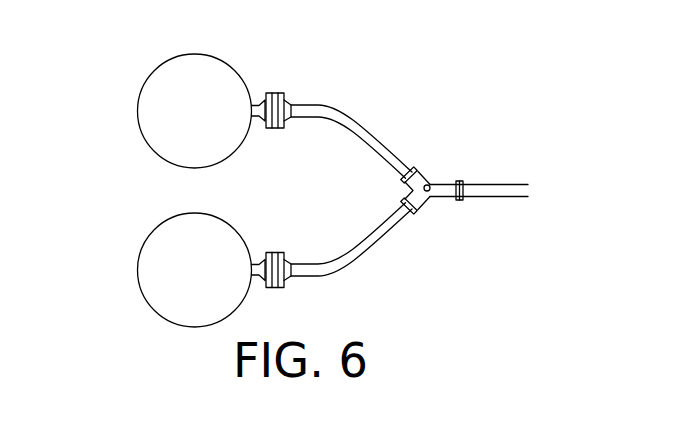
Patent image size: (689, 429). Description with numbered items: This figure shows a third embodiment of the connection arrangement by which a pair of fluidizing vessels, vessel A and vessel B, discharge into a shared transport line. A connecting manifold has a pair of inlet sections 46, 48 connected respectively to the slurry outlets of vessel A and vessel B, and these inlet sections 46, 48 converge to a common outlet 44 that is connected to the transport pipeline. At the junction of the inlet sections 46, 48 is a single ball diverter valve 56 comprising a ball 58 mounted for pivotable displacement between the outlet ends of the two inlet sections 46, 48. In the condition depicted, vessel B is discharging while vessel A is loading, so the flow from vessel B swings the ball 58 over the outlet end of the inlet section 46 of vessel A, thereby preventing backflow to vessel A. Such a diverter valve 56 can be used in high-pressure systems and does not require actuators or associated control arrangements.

The common outlet 44 is at (500, 184).
The inlet section 46 is at (349, 106).
The inlet section 48 is at (349, 276).
The ball diverter valve 56 is at (434, 199).
The ball 58 is at (430, 185).